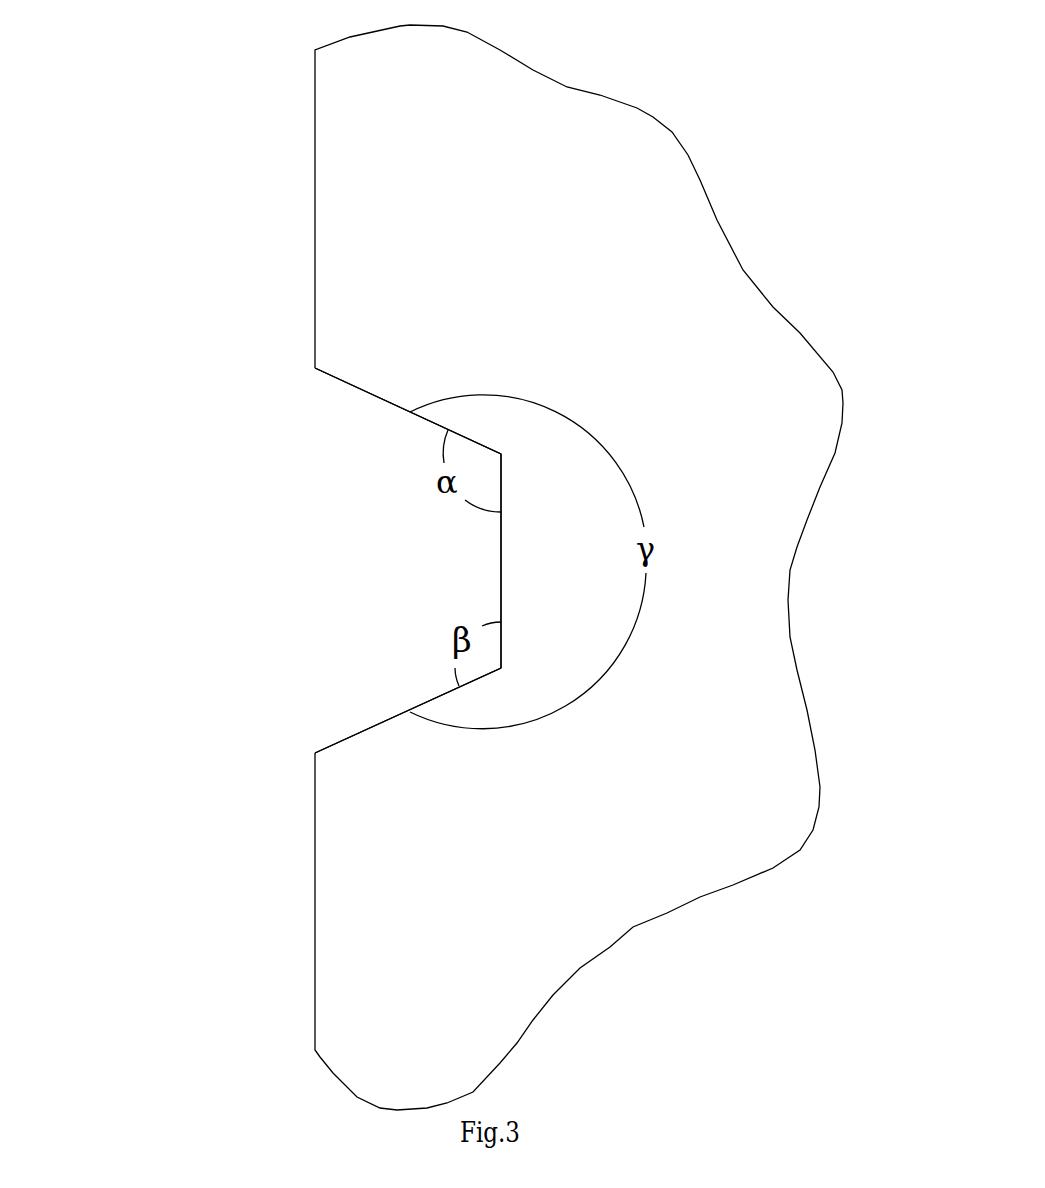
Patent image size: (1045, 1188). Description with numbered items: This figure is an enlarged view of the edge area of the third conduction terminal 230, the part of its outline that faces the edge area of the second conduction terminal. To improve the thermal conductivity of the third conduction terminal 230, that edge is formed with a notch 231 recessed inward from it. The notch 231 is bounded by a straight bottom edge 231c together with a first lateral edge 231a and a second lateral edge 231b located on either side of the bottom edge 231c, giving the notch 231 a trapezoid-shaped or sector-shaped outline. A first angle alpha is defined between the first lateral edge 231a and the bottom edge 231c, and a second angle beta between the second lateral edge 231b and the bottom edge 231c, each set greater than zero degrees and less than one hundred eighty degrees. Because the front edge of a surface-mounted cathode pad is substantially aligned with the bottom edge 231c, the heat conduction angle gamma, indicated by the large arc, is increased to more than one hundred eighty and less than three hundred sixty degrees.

The third conduction terminal 230 is at (767, 365).
The notch 231 is at (363, 607).
The first lateral edge 231a is at (367, 395).
The second lateral edge 231b is at (377, 727).
The bottom edge 231c is at (501, 557).